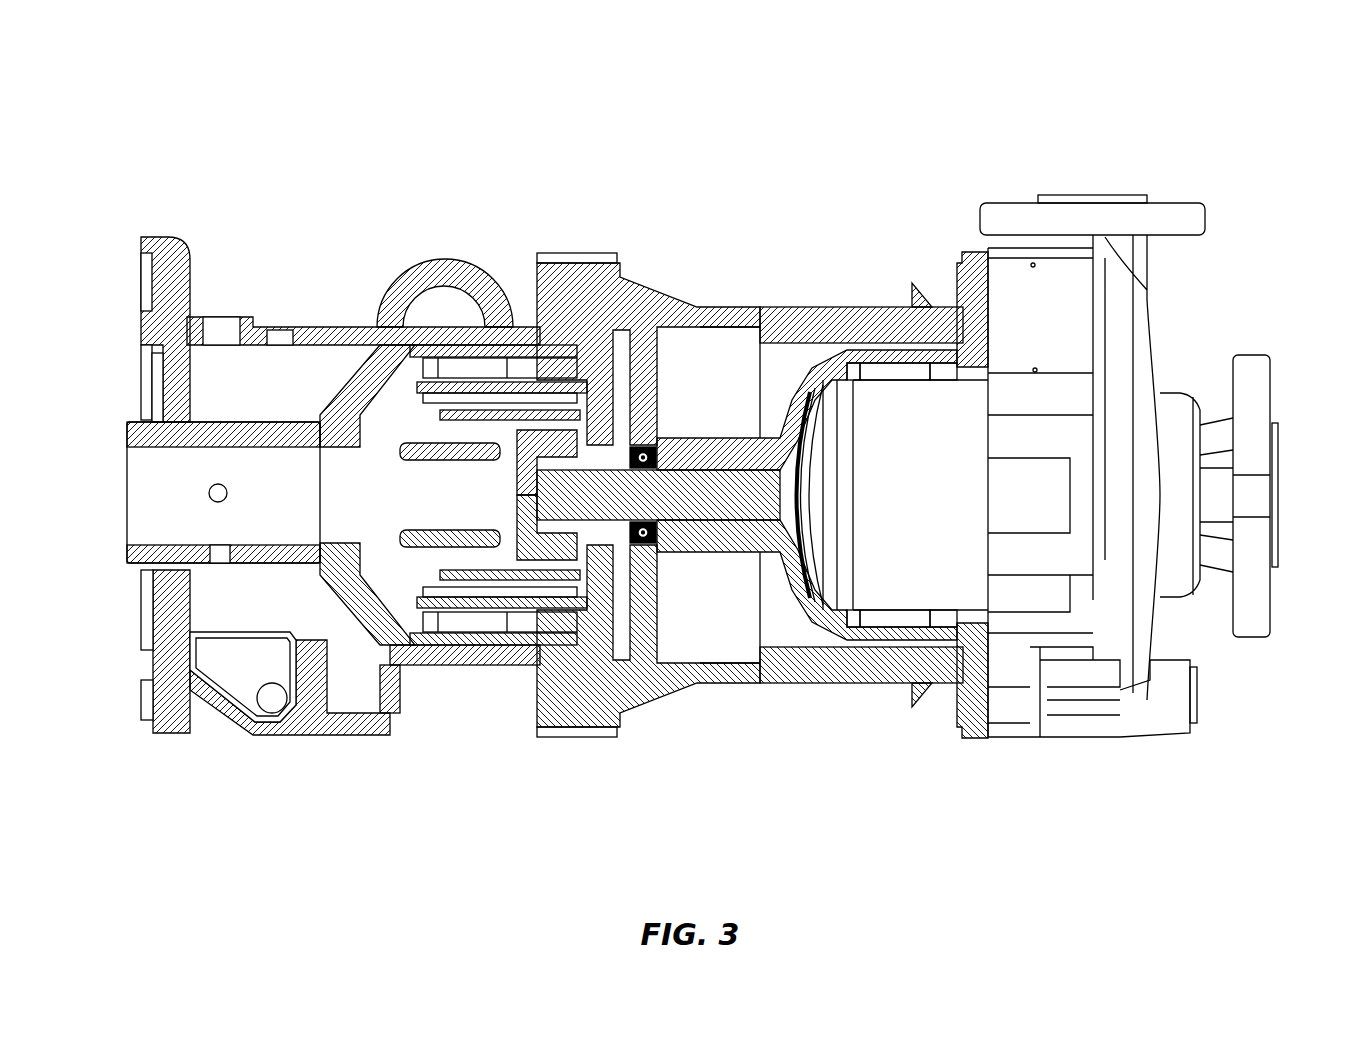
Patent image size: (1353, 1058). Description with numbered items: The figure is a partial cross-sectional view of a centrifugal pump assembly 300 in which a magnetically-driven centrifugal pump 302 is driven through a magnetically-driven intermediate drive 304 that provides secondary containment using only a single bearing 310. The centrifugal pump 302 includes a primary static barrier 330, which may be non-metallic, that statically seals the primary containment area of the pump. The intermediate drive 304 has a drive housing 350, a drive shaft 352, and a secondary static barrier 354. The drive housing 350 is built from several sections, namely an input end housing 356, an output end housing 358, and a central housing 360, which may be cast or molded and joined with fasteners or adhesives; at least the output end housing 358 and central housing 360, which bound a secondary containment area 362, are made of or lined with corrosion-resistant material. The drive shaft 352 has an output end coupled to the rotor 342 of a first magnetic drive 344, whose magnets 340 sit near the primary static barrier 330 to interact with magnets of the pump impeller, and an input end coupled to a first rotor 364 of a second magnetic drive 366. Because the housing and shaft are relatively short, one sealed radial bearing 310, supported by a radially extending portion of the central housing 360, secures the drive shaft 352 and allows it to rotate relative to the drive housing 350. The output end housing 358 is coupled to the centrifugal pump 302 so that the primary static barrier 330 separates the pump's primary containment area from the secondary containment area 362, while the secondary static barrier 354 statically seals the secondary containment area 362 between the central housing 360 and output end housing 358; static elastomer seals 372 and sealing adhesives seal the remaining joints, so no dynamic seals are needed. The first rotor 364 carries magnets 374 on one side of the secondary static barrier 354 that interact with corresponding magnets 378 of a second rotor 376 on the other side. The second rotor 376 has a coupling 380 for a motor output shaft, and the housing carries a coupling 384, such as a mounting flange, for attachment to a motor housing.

The centrifugal pump assembly 300 is at (226, 148).
The centrifugal pump 302 is at (973, 178).
The intermediate drive 304 is at (588, 193).
The bearing 310 is at (629, 555).
The primary static barrier 330 is at (893, 595).
The magnets 340 is at (870, 372).
The rotor 342 is at (806, 335).
The first magnetic drive 344 is at (786, 629).
The drive housing 350 is at (629, 250).
The drive shaft 352 is at (722, 652).
The secondary static barrier 354 is at (402, 442).
The input end housing 356 is at (513, 300).
The output end housing 358 is at (920, 300).
The central housing 360 is at (713, 312).
The secondary containment area 362 is at (706, 502).
The first rotor 364 is at (580, 437).
The second magnetic drive 366 is at (349, 615).
The static elastomer seals 372 is at (595, 312).
The magnets 374 is at (472, 587).
The second rotor 376 is at (537, 625).
The magnets 378 is at (392, 425).
The coupling 380 is at (246, 580).
The coupling 384 is at (199, 266).